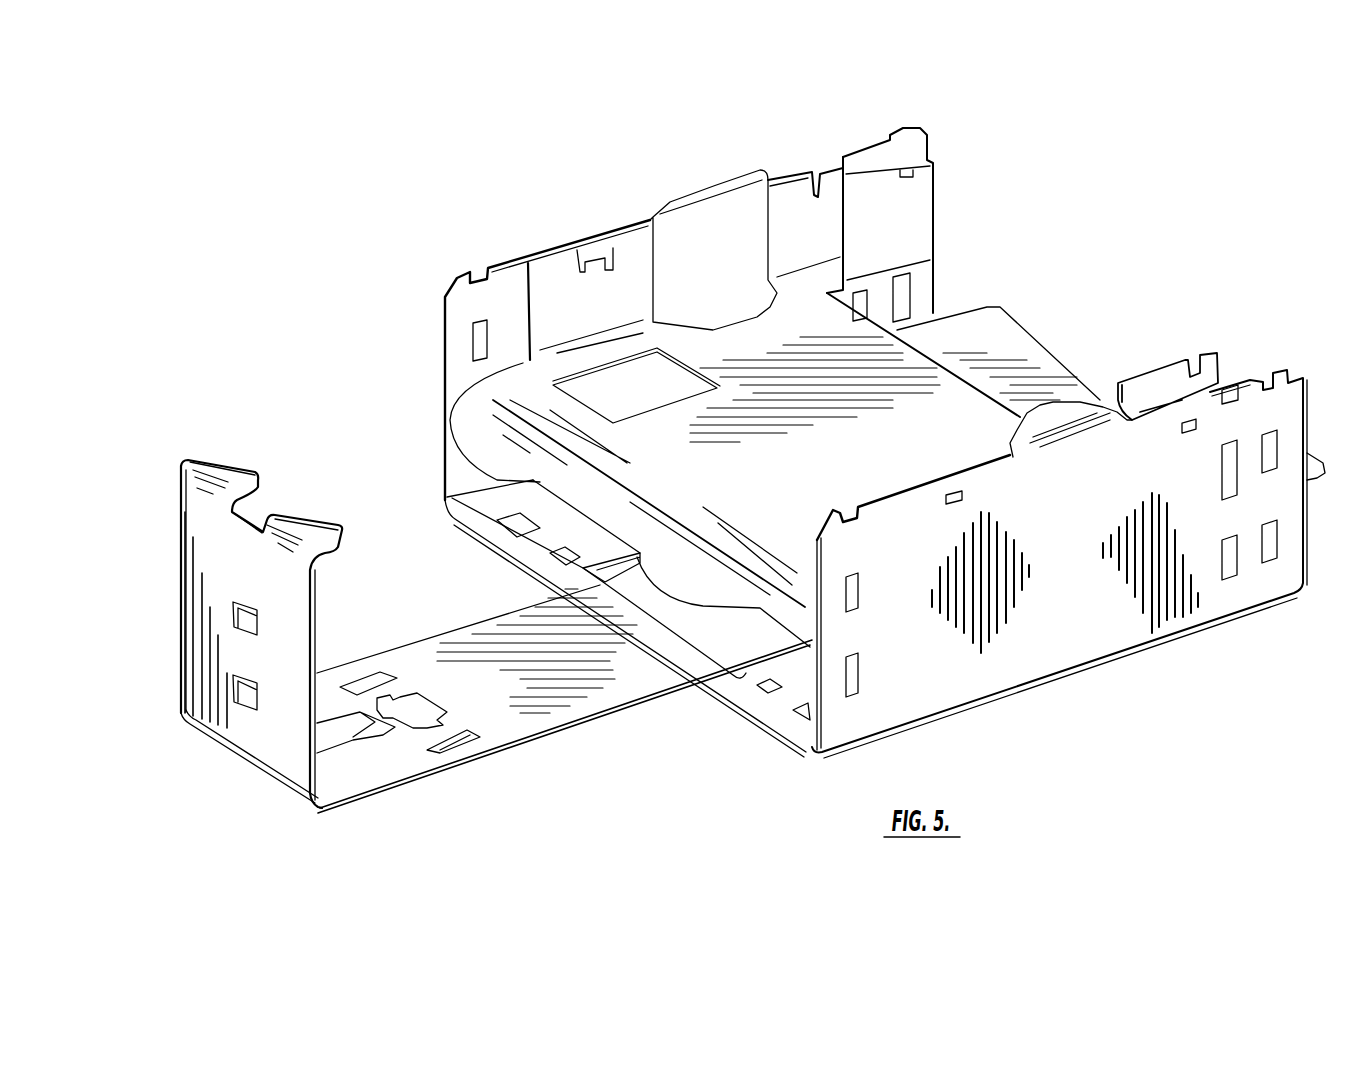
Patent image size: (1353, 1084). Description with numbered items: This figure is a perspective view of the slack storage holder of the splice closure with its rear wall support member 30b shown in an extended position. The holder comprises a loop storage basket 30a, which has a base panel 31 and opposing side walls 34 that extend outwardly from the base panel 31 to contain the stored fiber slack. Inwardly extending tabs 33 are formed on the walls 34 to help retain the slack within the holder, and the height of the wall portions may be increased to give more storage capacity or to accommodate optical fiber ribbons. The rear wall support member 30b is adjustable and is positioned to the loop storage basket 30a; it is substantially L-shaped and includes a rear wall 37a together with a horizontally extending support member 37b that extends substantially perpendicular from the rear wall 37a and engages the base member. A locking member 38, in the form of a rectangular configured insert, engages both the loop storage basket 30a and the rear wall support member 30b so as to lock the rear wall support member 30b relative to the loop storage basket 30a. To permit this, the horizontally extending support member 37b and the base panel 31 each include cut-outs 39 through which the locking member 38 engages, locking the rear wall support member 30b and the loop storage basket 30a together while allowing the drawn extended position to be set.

The loop storage basket 30a is at (891, 460).
The rear wall support member 30b is at (467, 690).
The base panel 31 is at (757, 723).
The inwardly extending tabs 33 is at (728, 190).
The side walls 34 is at (510, 247).
The rear wall 37a is at (205, 720).
The horizontally extending support member 37b is at (493, 735).
The locking member 38 is at (742, 658).
The cut-outs 39 is at (405, 717).